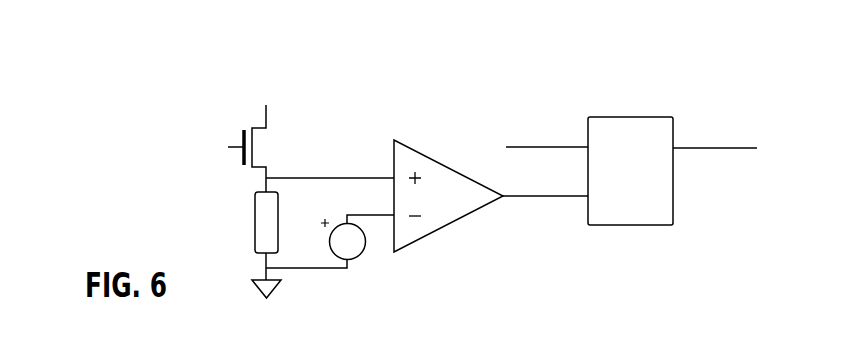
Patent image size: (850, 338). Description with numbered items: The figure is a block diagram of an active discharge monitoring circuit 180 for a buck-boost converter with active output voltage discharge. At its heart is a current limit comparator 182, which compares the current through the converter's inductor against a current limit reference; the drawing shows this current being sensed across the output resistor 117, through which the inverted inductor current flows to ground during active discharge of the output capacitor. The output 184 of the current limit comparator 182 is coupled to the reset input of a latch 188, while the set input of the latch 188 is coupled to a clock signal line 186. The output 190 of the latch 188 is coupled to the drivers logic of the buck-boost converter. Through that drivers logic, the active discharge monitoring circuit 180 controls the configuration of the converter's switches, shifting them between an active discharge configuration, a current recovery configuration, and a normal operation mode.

The active discharge monitoring circuit 180 is at (200, 73).
The output resistor 117 is at (253, 232).
The current limit comparator 182 is at (413, 143).
The output of current limit comparator 184 is at (548, 198).
The clock signal line 186 is at (506, 147).
The latch 188 is at (640, 117).
The output of latch 190 is at (745, 152).